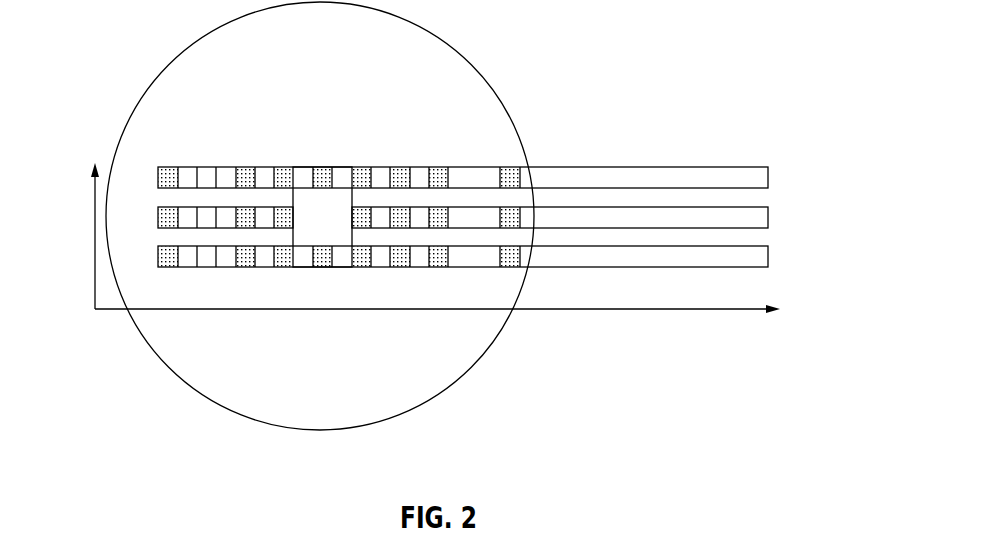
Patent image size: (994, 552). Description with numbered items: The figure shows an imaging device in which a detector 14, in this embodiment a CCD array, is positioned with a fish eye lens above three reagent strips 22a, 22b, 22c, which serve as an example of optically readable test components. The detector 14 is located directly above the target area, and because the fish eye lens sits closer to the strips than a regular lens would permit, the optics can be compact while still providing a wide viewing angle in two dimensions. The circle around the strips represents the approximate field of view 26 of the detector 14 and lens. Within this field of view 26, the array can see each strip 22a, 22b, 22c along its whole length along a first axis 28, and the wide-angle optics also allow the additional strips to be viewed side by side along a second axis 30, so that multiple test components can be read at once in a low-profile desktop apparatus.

The field of view 26 is at (456, 30).
The second axis 30 is at (93, 208).
The first axis 28 is at (327, 311).
The strip 22a is at (762, 257).
The strip 22b is at (762, 218).
The strip 22c is at (762, 178).
The imager 14 is at (338, 193).